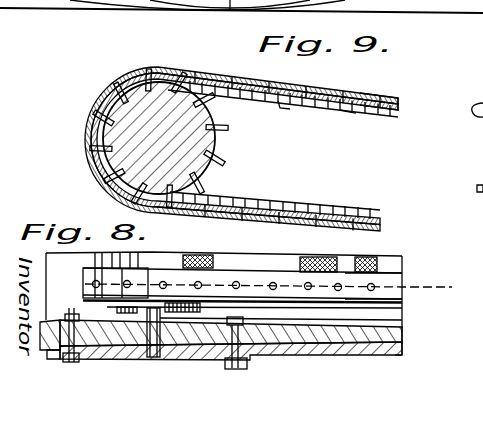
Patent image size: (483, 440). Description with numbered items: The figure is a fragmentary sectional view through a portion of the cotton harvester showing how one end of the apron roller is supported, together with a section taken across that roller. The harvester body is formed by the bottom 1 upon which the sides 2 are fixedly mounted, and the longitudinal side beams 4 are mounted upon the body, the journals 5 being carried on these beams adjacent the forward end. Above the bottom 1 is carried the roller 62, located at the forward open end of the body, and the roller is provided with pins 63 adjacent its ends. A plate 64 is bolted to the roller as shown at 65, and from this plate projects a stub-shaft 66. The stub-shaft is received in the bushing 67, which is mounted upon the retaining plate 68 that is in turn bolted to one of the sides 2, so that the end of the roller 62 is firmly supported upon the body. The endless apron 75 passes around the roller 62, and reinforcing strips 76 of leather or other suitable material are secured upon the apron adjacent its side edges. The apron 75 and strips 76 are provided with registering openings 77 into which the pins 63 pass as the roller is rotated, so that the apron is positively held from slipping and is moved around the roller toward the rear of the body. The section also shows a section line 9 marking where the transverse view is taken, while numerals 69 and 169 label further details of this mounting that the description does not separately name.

In FIG. 8, the bottom 1 is at (397, 312).
In FIG. 8, the sides 2 is at (398, 328).
In FIG. 8, the longitudinal side beams 4 is at (400, 357).
In FIG. 9, the journals 5 is at (230, 10).
In FIG. 8, the roller block 9 is at (83, 280).
In FIG. 9, the roller 62 is at (90, 117).
In FIG. 9, the pins 63 is at (212, 171).
In FIG. 8, the pins 63 is at (165, 281).
In FIG. 8, the plates 64 is at (84, 302).
In FIG. 8, the bolts 65 is at (187, 313).
In FIG. 8, the stub-shafts 66 is at (157, 298).
In FIG. 8, the bushing 67 is at (196, 282).
In FIG. 8, the retaining plate 68 is at (47, 352).
In FIG. 8, the clamp bolt 69 is at (246, 319).
In FIG. 9, the endless apron 75 is at (357, 113).
In FIG. 8, the endless apron 75 is at (390, 263).
In FIG. 9, the reinforcing strips 76 is at (372, 97).
In FIG. 8, the reinforcing strips 76 is at (398, 284).
In FIG. 9, the registering openings 77 is at (283, 102).
In FIG. 8, the registering openings 77 is at (308, 282).
In FIG. 8, the anchor bolt 169 is at (85, 334).